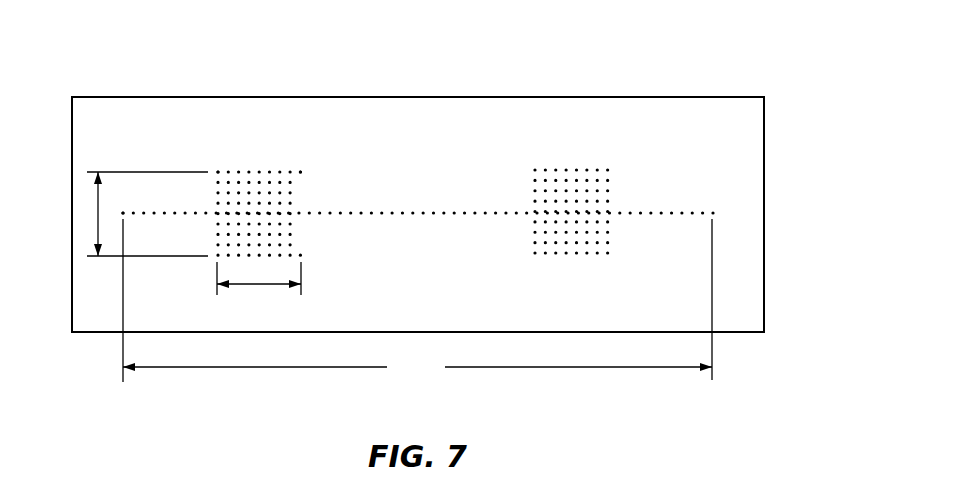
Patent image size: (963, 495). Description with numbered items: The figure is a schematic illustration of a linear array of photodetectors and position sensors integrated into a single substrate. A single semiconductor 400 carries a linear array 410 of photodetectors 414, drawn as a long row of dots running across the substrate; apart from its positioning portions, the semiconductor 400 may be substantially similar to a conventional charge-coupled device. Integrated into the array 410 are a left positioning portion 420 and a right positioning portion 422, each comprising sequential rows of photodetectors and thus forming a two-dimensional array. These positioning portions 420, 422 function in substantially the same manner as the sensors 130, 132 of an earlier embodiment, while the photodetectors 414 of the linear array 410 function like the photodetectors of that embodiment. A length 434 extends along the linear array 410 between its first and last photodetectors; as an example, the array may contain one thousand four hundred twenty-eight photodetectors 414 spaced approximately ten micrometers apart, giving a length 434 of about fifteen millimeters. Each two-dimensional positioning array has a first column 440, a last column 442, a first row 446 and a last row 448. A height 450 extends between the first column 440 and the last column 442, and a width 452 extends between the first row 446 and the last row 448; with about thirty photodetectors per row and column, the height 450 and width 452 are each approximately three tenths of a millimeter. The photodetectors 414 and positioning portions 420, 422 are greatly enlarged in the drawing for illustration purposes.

The semiconductor 400 is at (718, 53).
The linear array 410 is at (722, 210).
The photodetectors 414 is at (474, 212).
The left positioning portion 420 is at (255, 158).
The right positioning portion 422 is at (579, 155).
The first column 440 is at (218, 168).
The last column 442 is at (301, 168).
The first row 446 is at (305, 170).
The last row 448 is at (306, 256).
The sensor 130 is at (123, 210).
The sensor 132 is at (713, 210).
The width 452 is at (97, 213).
The height 450 is at (260, 285).
The length 434 is at (417, 301).